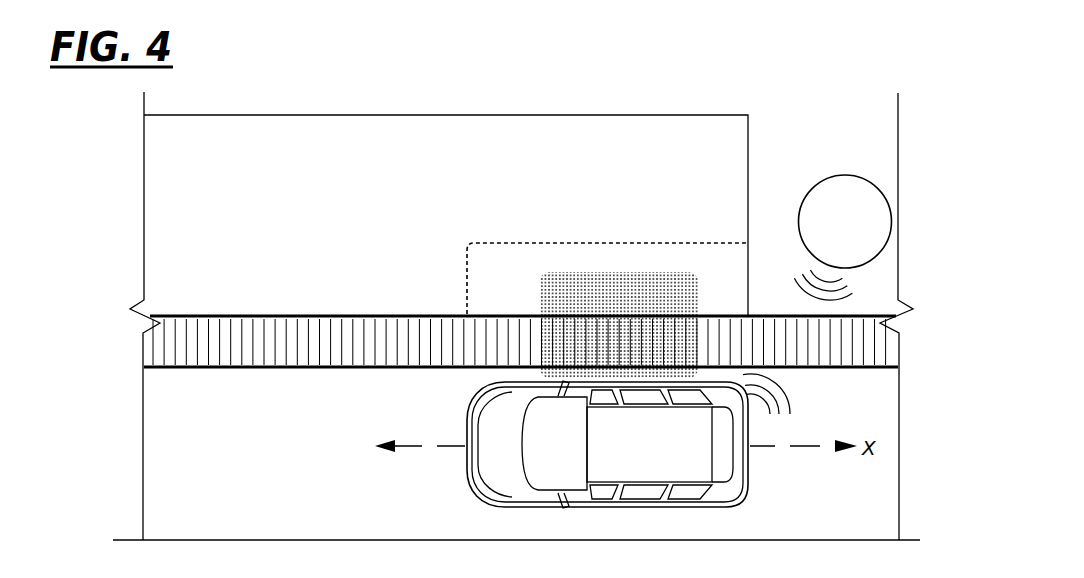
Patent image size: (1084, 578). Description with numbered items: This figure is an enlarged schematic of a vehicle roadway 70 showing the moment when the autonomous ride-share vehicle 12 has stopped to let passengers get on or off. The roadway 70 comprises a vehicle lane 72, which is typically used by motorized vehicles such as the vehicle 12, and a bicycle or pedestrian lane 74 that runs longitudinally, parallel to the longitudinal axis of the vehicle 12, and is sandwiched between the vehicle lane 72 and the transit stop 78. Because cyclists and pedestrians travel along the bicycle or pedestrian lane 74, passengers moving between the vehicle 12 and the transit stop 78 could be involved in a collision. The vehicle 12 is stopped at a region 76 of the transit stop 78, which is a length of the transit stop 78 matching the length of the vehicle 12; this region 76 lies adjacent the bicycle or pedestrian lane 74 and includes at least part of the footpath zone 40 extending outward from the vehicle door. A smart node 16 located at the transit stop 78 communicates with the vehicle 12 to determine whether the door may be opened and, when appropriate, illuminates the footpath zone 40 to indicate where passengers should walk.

The vehicle roadway 70 is at (108, 325).
The transit stop 78 is at (417, 227).
The region of the transit stop 76 is at (613, 243).
The footpath zone 40 is at (652, 266).
The bicycle or pedestrian lane 74 is at (432, 354).
The vehicle lane 72 is at (289, 468).
The smart node 16 is at (835, 262).
The vehicle 12 is at (634, 456).